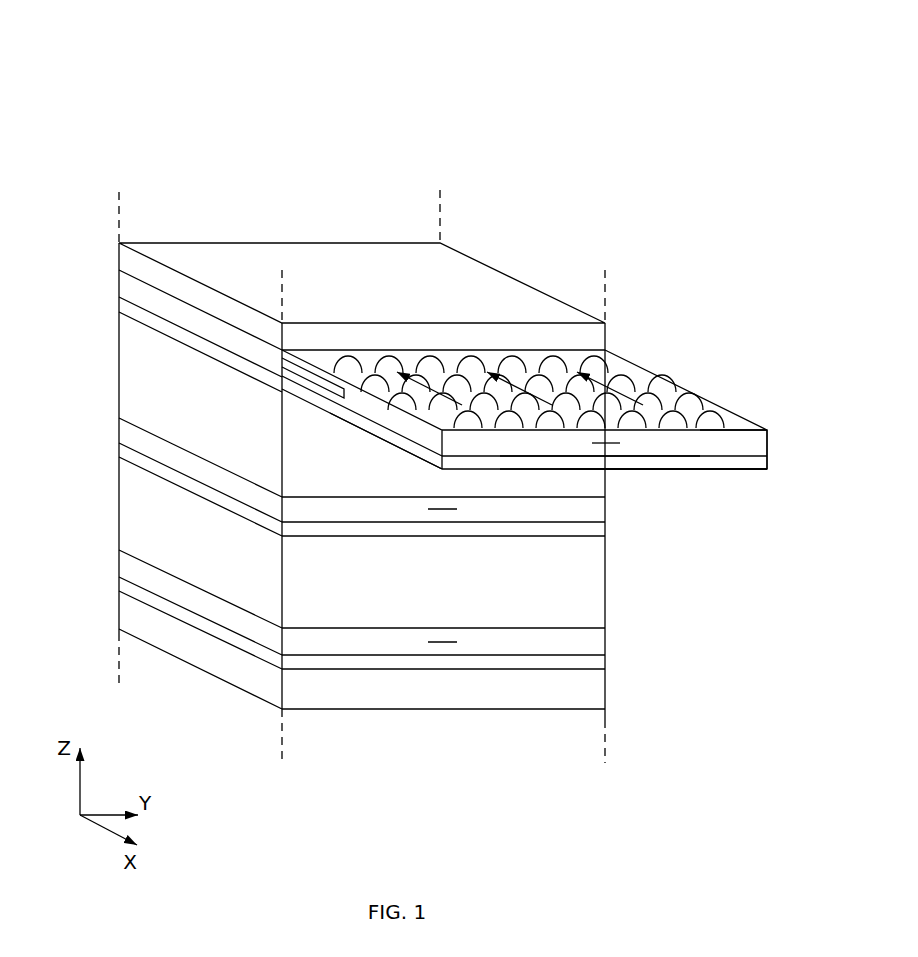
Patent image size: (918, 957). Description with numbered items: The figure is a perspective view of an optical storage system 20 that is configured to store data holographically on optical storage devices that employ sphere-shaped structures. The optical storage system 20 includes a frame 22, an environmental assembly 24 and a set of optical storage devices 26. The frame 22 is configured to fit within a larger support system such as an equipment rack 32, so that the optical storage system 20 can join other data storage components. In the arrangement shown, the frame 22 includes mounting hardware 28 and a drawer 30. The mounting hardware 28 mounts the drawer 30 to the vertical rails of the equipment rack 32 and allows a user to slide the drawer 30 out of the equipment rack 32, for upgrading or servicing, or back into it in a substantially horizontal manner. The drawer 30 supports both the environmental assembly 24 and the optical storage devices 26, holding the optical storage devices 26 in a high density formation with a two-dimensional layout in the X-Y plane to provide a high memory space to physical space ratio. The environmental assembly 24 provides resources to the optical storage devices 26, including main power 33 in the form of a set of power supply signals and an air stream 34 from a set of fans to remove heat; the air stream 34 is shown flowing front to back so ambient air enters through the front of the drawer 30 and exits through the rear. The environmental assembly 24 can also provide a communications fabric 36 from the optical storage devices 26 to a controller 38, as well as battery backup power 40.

The optical storage system 20 is at (135, 88).
The frame 22 is at (516, 410).
The environmental assembly 24 is at (748, 471).
The optical storage devices 26 is at (663, 381).
The mounting hardware 28 is at (297, 375).
The drawer 30 is at (372, 413).
The equipment rack 32 is at (118, 243).
The main power 33 is at (388, 441).
The air stream 34 is at (427, 386).
The communications fabric 36 is at (613, 471).
The controller 38 is at (649, 471).
The battery backup power 40 is at (686, 471).